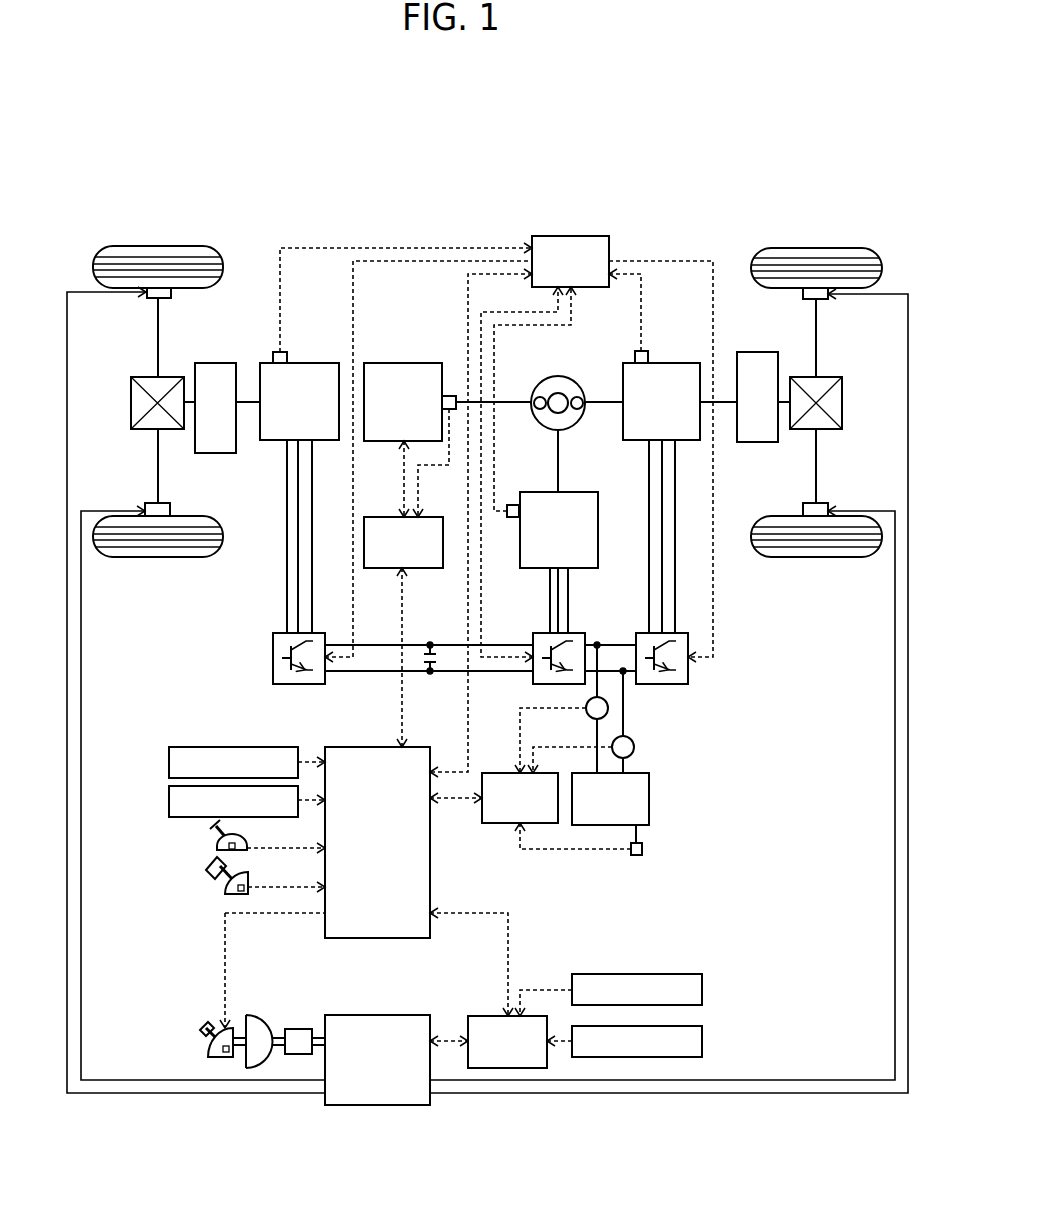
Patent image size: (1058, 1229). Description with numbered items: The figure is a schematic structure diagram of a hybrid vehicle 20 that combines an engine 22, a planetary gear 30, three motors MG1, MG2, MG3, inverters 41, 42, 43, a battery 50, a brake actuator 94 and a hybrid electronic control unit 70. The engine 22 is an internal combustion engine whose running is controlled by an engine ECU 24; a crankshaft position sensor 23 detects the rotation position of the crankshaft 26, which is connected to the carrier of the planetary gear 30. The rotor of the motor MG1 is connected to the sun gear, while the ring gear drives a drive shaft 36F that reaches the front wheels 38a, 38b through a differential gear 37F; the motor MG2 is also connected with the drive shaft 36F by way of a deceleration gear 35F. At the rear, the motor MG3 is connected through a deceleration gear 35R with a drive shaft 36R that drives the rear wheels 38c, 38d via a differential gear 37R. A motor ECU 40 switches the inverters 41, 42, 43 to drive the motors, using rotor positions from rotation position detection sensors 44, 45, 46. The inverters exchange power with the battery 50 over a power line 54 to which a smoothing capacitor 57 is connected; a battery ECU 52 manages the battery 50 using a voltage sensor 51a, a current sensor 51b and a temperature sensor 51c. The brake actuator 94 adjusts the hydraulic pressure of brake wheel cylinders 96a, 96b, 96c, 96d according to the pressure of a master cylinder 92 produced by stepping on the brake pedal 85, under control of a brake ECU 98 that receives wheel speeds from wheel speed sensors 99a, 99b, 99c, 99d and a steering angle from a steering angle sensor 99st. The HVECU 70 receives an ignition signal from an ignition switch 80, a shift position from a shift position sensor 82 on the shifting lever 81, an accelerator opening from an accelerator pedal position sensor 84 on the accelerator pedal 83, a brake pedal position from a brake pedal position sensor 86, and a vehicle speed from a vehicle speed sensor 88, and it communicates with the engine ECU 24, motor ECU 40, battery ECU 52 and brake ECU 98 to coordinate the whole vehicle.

The hybrid vehicle 20 is at (725, 195).
The engine 22 is at (404, 363).
The crankshaft position sensor 23 is at (448, 396).
The engine ECU 24 is at (396, 517).
The crankshaft 26 is at (507, 400).
The planetary gear 30 is at (556, 376).
The deceleration gear 35F is at (757, 352).
The deceleration gear 35R is at (214, 363).
The drive shaft 36F is at (725, 405).
The drive shaft 36R is at (250, 405).
The differential gear 37F is at (830, 377).
The differential gear 37R is at (141, 377).
The front wheel 38a is at (822, 248).
The front wheel 38b is at (816, 557).
The rear wheel 38c is at (160, 246).
The rear wheel 38d is at (158, 557).
The motor ECU 40 is at (572, 236).
The inverter 41 is at (582, 633).
The inverter 42 is at (685, 633).
The inverter 43 is at (322, 633).
The rotation position detection sensor 44 is at (510, 505).
The rotation position detection sensor 45 is at (635, 356).
The rotation position detection sensor 46 is at (279, 352).
The motor MG1 is at (583, 492).
The motor MG2 is at (673, 363).
The motor MG3 is at (312, 363).
The battery 50 is at (649, 800).
The voltage sensor 51a is at (634, 747).
The current sensor 51b is at (608, 708).
The temperature sensor 51c is at (642, 849).
The battery ECU 52 is at (505, 773).
The power line 54 is at (383, 670).
The capacitor 57 is at (433, 652).
The hybrid electronic control unit 70 is at (350, 747).
The ignition switch 80 is at (169, 762).
The shifting lever 81 is at (213, 830).
The shift position sensor 82 is at (228, 848).
The accelerator pedal 83 is at (208, 866).
The accelerator pedal position sensor 84 is at (228, 888).
The brake pedal 85 is at (205, 1032).
The brake pedal position sensor 86 is at (222, 1045).
The vehicle speed sensor 88 is at (169, 800).
The master cylinder 92 is at (298, 1029).
The brake actuator 94 is at (377, 1015).
The brake wheel cylinder 96a is at (807, 300).
The brake wheel cylinder 96b is at (812, 502).
The brake wheel cylinder 96c is at (172, 299).
The brake wheel cylinder 96d is at (168, 502).
The brake ECU 98 is at (490, 1016).
The steering angle sensor 99st is at (702, 990).
The wheel speed sensor 99a is at (687, 1041).
The wheel speed sensor 99b is at (624, 1041).
The wheel speed sensor 99c is at (624, 1041).
The wheel speed sensor 99d is at (702, 1041).